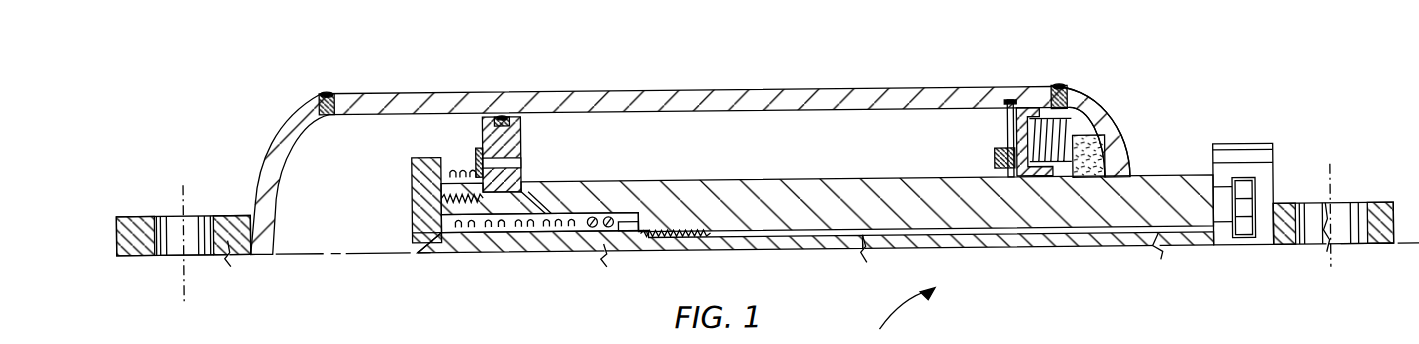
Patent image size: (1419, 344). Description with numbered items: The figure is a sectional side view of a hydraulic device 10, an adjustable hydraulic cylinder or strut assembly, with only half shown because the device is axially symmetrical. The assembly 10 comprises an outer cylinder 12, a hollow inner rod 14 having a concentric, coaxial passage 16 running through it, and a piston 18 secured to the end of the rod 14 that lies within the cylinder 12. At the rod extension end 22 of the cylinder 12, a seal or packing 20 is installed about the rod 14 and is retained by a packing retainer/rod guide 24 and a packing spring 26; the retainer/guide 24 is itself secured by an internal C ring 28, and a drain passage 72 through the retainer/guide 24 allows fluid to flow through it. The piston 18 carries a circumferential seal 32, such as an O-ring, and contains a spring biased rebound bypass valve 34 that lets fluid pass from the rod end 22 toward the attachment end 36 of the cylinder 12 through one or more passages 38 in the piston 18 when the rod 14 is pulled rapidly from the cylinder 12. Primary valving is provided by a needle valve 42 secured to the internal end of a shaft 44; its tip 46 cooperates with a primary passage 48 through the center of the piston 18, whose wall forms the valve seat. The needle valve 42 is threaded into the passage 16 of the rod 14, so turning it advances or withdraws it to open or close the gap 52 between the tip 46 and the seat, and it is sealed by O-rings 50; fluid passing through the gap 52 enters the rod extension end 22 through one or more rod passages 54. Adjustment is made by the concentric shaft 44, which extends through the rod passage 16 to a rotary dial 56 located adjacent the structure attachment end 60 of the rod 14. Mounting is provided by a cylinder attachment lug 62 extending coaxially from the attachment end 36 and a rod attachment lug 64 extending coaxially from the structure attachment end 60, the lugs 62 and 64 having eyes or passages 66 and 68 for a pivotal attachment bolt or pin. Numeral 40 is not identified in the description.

The hydraulic device 10 is at (889, 314).
The outer cylinder 12 is at (762, 90).
The hollow inner rod 14 is at (858, 180).
The passage 16 is at (1028, 238).
The piston 18 is at (521, 135).
The seal or packing 20 is at (1108, 152).
The rod extension end 22 is at (1118, 125).
The packing retainer/rod guide 24 is at (1034, 111).
The packing spring 26 is at (1059, 120).
The internal C ring 28 is at (1008, 122).
The circumferential seal 32 is at (504, 114).
The spring biased rebound bypass valve 34 is at (478, 147).
The attachment end 36 is at (333, 89).
The passages 38 is at (521, 160).
The block 40 is at (412, 200).
The needle valve 42 is at (553, 231).
The shaft 44 is at (797, 251).
The tip 46 is at (424, 250).
The primary passage 48 is at (416, 250).
The O-rings 50 is at (600, 212).
The gap 52 is at (1255, 212).
The rod passages 54 is at (568, 218).
The rotary dial 56 is at (1243, 251).
The structure attachment end 60 is at (1276, 251).
The cylinder attachment lug 62 is at (141, 211).
The rod attachment lug 64 is at (1370, 209).
The eye or passage 66 is at (200, 251).
The eye or passage 68 is at (1353, 251).
The drain passage 72 is at (1000, 155).